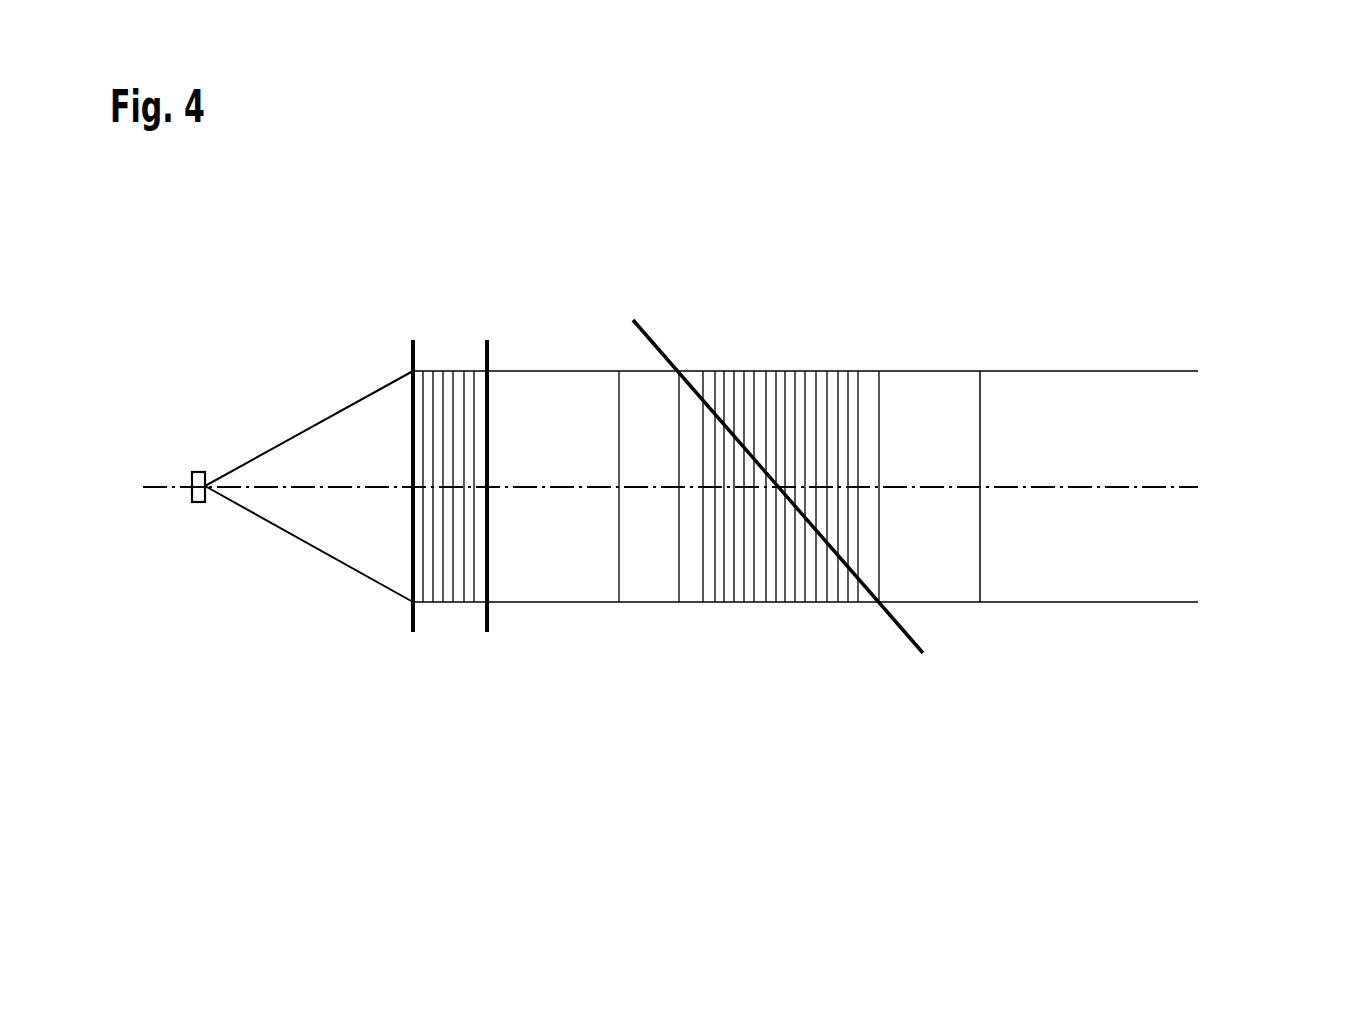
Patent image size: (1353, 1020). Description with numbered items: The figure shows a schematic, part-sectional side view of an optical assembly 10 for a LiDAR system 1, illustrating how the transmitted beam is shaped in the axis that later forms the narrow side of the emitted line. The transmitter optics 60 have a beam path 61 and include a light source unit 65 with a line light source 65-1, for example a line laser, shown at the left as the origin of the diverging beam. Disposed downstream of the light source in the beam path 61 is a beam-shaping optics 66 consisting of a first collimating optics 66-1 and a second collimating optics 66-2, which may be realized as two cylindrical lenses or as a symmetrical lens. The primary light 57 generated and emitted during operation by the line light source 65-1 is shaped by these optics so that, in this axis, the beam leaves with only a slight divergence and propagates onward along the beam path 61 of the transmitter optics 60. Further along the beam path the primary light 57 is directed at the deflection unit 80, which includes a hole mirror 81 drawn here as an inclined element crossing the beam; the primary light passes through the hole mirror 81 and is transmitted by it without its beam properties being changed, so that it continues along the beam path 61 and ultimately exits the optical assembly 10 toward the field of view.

The LiDAR system 1 is at (288, 416).
The optical assembly 10 is at (288, 416).
The transmitter optics 60 is at (288, 416).
The light source unit 65 is at (203, 446).
The line light source 65-1 is at (197, 471).
The beam-shaping optics 66 is at (452, 400).
The first collimating optics 66-1 is at (410, 357).
The second collimating optics 66-2 is at (489, 356).
The primary light 57 is at (1026, 371).
The beam path 61 is at (1226, 401).
The deflection unit 80 is at (778, 460).
The hole mirror 81 is at (663, 350).